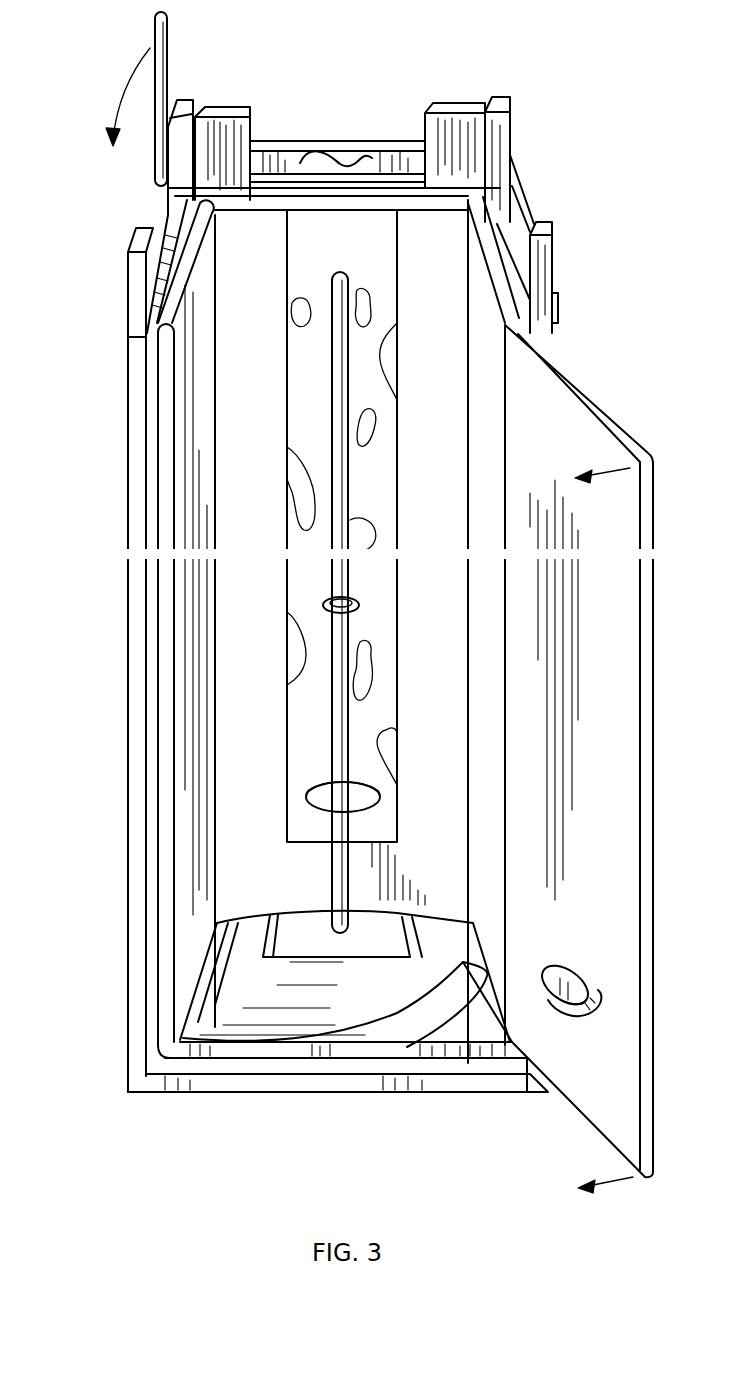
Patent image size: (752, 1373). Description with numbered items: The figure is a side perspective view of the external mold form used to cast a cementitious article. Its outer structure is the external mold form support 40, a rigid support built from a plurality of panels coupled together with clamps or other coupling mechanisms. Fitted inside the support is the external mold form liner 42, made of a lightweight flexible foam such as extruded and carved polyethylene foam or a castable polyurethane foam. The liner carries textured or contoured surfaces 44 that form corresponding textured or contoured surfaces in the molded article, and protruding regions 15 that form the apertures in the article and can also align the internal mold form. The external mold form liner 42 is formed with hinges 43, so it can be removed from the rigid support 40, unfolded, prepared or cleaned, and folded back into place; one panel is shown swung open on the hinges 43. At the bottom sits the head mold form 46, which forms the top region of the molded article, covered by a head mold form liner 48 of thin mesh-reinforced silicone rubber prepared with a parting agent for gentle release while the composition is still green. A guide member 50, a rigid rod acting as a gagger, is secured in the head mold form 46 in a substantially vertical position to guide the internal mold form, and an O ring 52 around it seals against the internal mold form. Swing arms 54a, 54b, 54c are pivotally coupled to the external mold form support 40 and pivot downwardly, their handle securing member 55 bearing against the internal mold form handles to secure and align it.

The protruding regions 15 is at (312, 800).
The external mold form support 40 is at (137, 382).
The external mold form liner 42 is at (165, 430).
The hinges 43 is at (468, 462).
The textured or contoured surfaces 44 is at (317, 242).
The head mold form 46 is at (443, 1033).
The head mold form liner 48 is at (427, 1018).
The guide member 50 is at (333, 388).
The O ring 52 is at (330, 603).
The swing arm 54a is at (168, 24).
The swing arm 54b is at (277, 143).
The swing arm 54c is at (521, 189).
The handle securing member 55 is at (353, 167).